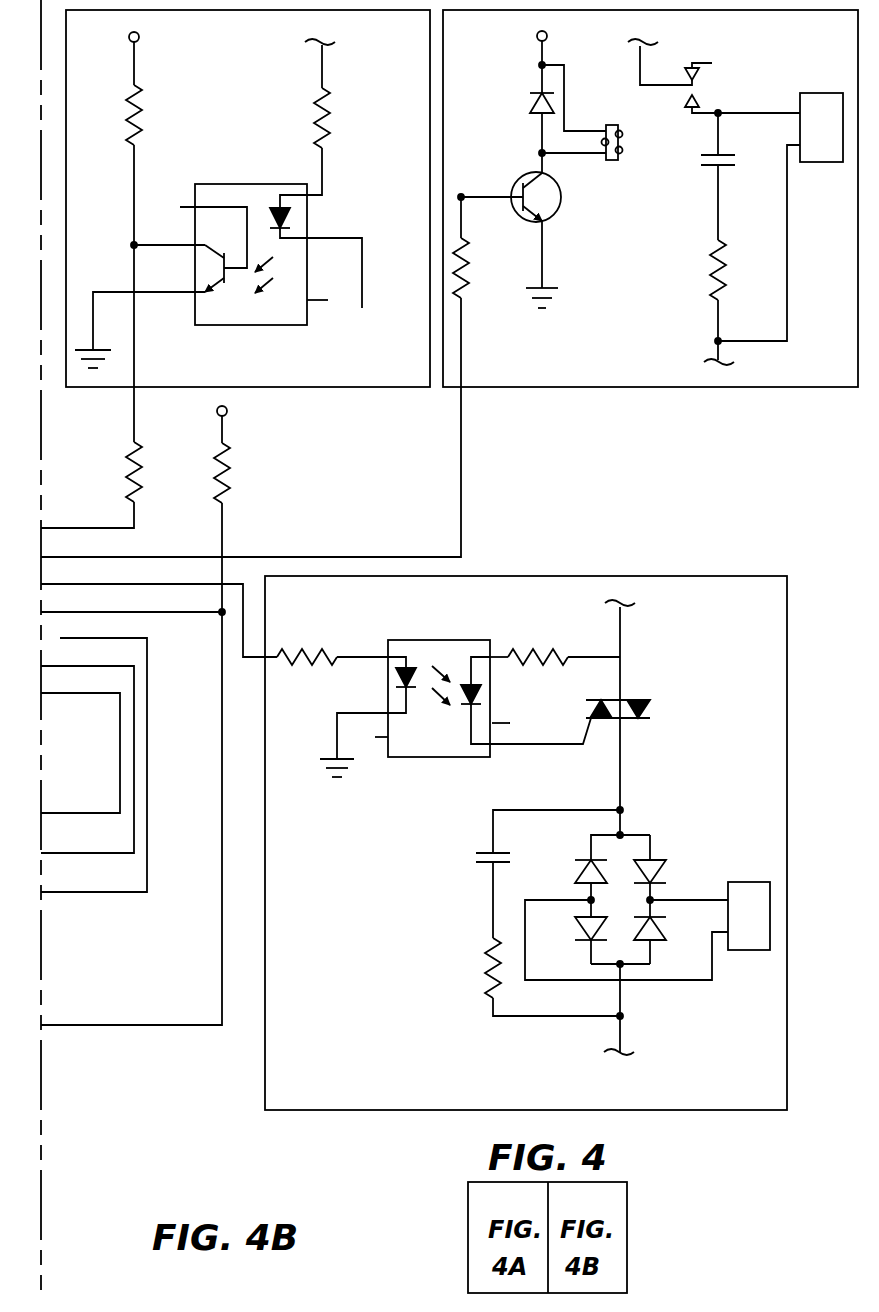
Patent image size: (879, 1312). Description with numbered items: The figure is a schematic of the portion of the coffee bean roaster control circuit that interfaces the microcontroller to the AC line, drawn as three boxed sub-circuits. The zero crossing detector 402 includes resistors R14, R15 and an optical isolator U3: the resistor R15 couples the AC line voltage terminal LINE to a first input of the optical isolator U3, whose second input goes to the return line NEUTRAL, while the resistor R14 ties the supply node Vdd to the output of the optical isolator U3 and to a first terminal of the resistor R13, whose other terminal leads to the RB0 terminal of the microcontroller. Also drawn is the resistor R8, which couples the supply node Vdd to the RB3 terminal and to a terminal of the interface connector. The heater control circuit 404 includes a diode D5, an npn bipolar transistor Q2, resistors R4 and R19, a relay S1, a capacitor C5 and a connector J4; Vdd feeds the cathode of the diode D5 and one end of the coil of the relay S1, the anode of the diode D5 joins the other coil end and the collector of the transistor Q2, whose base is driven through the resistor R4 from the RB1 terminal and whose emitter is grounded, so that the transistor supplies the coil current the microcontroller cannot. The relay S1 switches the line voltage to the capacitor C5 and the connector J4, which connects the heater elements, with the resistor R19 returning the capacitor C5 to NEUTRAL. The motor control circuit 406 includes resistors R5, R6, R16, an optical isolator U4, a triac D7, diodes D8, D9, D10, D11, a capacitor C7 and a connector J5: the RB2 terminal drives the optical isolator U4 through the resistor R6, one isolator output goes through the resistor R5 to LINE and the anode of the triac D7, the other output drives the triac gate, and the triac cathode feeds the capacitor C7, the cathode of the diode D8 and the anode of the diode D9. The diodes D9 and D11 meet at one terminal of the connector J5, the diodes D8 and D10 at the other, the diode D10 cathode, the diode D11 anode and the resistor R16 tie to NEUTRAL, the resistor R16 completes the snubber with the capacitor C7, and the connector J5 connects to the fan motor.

The zero crossing detector 402 is at (276, 48).
The heater control circuit 404 is at (841, 48).
The motor control circuit 406 is at (766, 612).
The resistor R14 is at (157, 135).
The resistor R15 is at (332, 117).
The optical isolator U3 is at (247, 259).
The resistor R13 is at (91, 386).
The resistor R8 is at (226, 451).
The diode D5 is at (541, 98).
The relay S1 is at (598, 112).
The npn bipolar transistor Q2 is at (526, 240).
The resistor R4 is at (483, 247).
The connector J4 is at (735, 184).
The capacitor C5 is at (737, 176).
The resistor R19 is at (751, 308).
The resistor R6 is at (332, 643).
The optical isolator U4 is at (455, 692).
The resistor R5 is at (555, 643).
The triac D7 is at (640, 711).
The capacitor C7 is at (531, 872).
The resistor R16 is at (528, 977).
The diode D8 is at (595, 874).
The diode D9 is at (668, 876).
The diode D10 is at (568, 940).
The diode D11 is at (653, 986).
The connector J5 is at (647, 918).